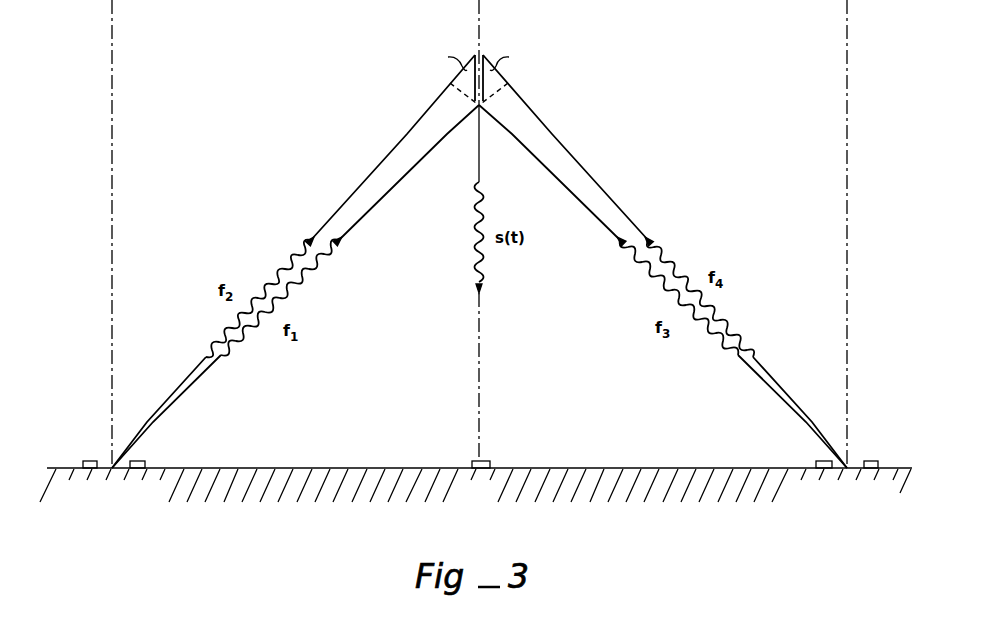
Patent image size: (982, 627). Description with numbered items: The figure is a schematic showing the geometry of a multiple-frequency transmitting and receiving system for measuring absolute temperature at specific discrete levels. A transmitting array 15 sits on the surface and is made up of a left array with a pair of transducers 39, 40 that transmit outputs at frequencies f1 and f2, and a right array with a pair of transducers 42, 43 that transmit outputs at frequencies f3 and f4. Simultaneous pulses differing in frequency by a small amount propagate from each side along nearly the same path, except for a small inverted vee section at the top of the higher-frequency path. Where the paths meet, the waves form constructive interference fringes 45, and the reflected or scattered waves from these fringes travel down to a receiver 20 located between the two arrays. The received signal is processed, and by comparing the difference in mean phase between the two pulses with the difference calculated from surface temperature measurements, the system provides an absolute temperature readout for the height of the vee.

The transmitting array 15 is at (126, 503).
The receiver 20 is at (489, 461).
The transducer 39 is at (90, 461).
The transducer 40 is at (140, 461).
The transducer 42 is at (822, 461).
The transducer 43 is at (870, 461).
The constructive interference fringes 45 is at (503, 79).